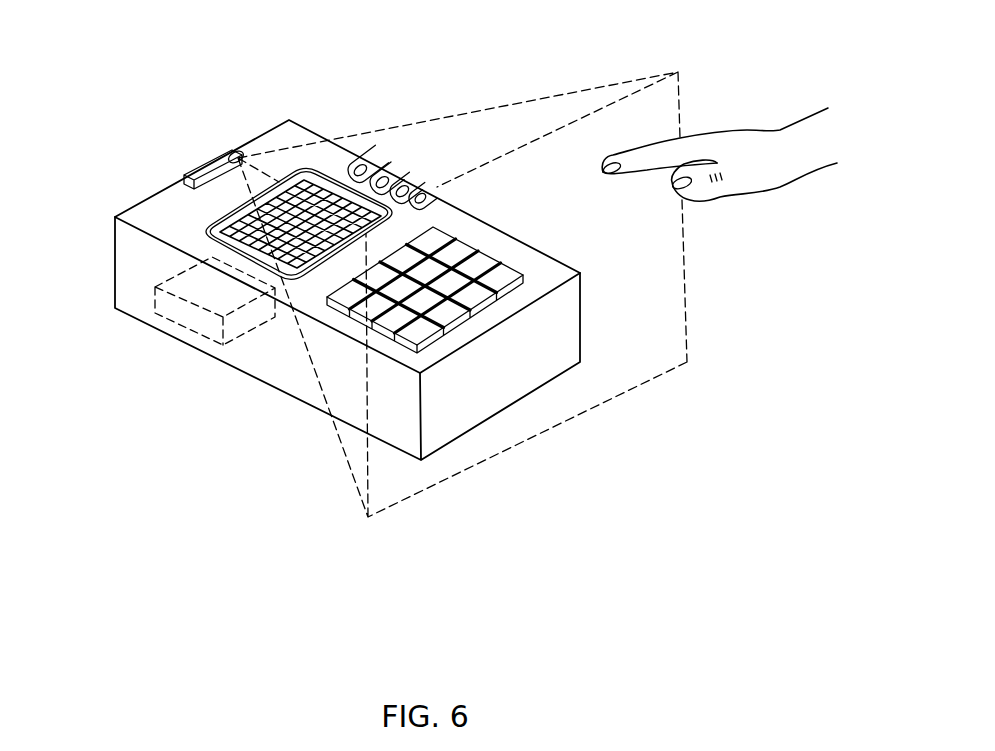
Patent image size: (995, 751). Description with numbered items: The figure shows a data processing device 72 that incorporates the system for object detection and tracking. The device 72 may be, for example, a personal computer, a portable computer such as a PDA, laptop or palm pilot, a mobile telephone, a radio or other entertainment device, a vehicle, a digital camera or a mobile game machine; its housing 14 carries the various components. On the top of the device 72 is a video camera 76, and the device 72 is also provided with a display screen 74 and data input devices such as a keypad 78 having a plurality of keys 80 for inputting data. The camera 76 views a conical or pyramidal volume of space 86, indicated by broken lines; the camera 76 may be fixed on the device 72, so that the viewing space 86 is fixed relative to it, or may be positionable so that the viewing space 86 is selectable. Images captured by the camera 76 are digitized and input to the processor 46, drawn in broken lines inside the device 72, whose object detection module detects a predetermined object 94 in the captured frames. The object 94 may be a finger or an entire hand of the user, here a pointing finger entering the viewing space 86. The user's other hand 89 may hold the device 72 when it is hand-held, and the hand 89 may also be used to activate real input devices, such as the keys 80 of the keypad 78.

The data processing device 72 is at (95, 247).
The housing 14 is at (113, 311).
The processor 46 is at (190, 315).
The display screen 74 is at (299, 170).
The video camera 76 is at (195, 177).
The keypad 78 is at (358, 325).
The keys 80 is at (422, 328).
The volume of space 86 is at (599, 100).
The other hand 89 is at (382, 158).
The predetermined object 94 is at (703, 148).